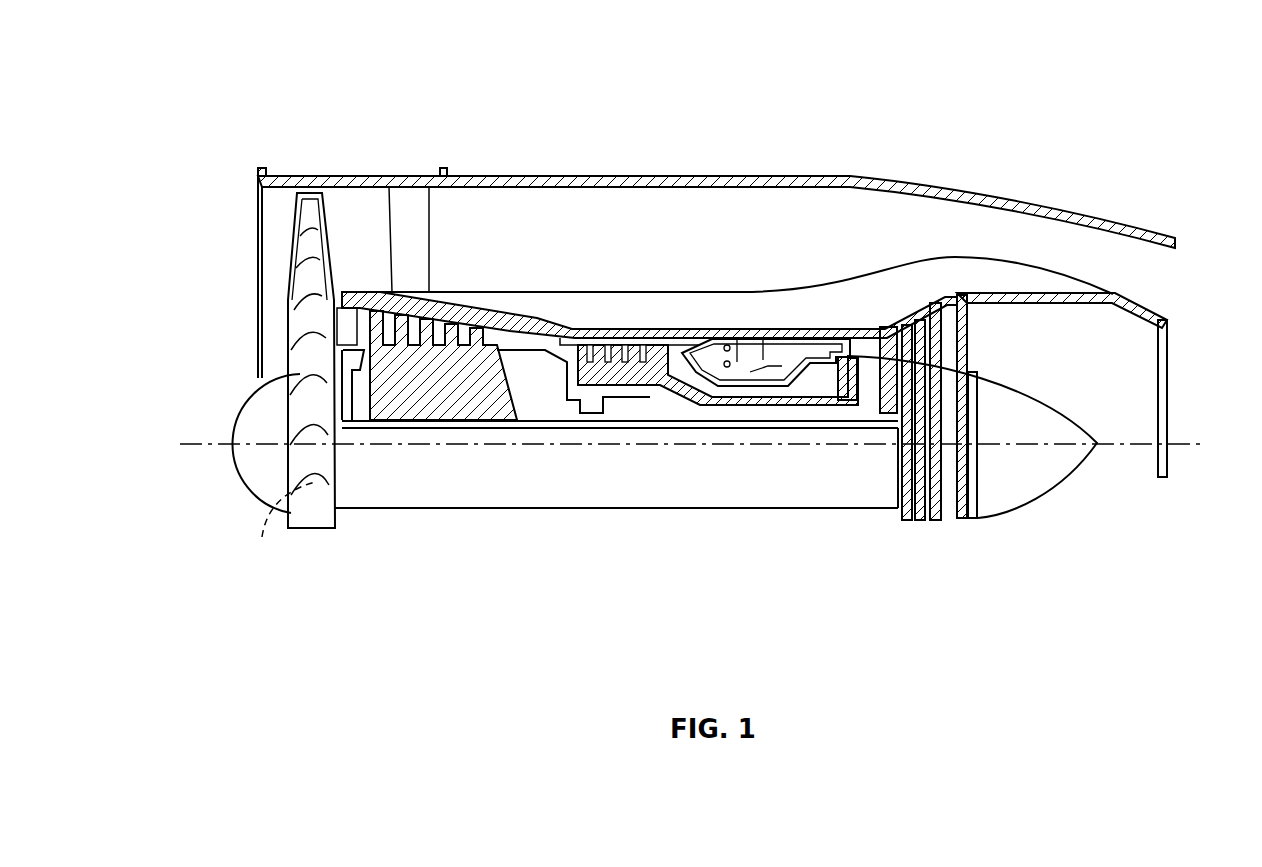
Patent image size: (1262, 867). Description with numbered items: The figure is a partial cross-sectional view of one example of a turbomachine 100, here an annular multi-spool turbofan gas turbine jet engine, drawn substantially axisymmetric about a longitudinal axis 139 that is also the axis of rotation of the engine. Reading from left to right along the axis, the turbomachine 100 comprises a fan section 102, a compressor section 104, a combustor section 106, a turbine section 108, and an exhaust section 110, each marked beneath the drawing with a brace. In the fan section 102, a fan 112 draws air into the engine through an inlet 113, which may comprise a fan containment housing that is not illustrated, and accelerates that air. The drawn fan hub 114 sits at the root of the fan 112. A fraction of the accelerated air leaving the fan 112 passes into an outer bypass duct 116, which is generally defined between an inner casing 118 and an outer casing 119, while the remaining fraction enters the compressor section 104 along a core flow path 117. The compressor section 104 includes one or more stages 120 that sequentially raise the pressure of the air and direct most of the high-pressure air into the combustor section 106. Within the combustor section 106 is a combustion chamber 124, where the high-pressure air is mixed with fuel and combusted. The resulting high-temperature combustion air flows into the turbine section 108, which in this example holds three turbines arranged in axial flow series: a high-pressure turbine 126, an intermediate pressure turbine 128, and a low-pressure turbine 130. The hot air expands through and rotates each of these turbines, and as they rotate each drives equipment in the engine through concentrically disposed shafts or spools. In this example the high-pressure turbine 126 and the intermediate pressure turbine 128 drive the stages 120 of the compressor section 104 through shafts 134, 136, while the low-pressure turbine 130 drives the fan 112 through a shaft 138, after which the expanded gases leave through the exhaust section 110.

The turbomachine 100 is at (288, 120).
The fan section 102 is at (213, 582).
The compressor section 104 is at (348, 582).
The combustor section 106 is at (693, 582).
The turbine section 108 is at (968, 582).
The exhaust section 110 is at (975, 582).
The fan 112 is at (283, 268).
The inlet 113 is at (326, 177).
The fan hub 114 is at (274, 471).
The outer bypass duct 116 is at (622, 204).
The core flow path 117 is at (363, 318).
The inner casing 118 is at (473, 300).
The outer casing 119 is at (672, 177).
The stages 120 is at (441, 393).
The combustion chamber 124 is at (790, 350).
The high-pressure turbine 126 is at (848, 355).
The intermediate pressure turbine 128 is at (887, 335).
The low-pressure turbine 130 is at (943, 408).
The shaft 134 is at (700, 405).
The shaft 136 is at (791, 423).
The shaft 138 is at (888, 423).
The longitudinal axis 139 is at (196, 443).